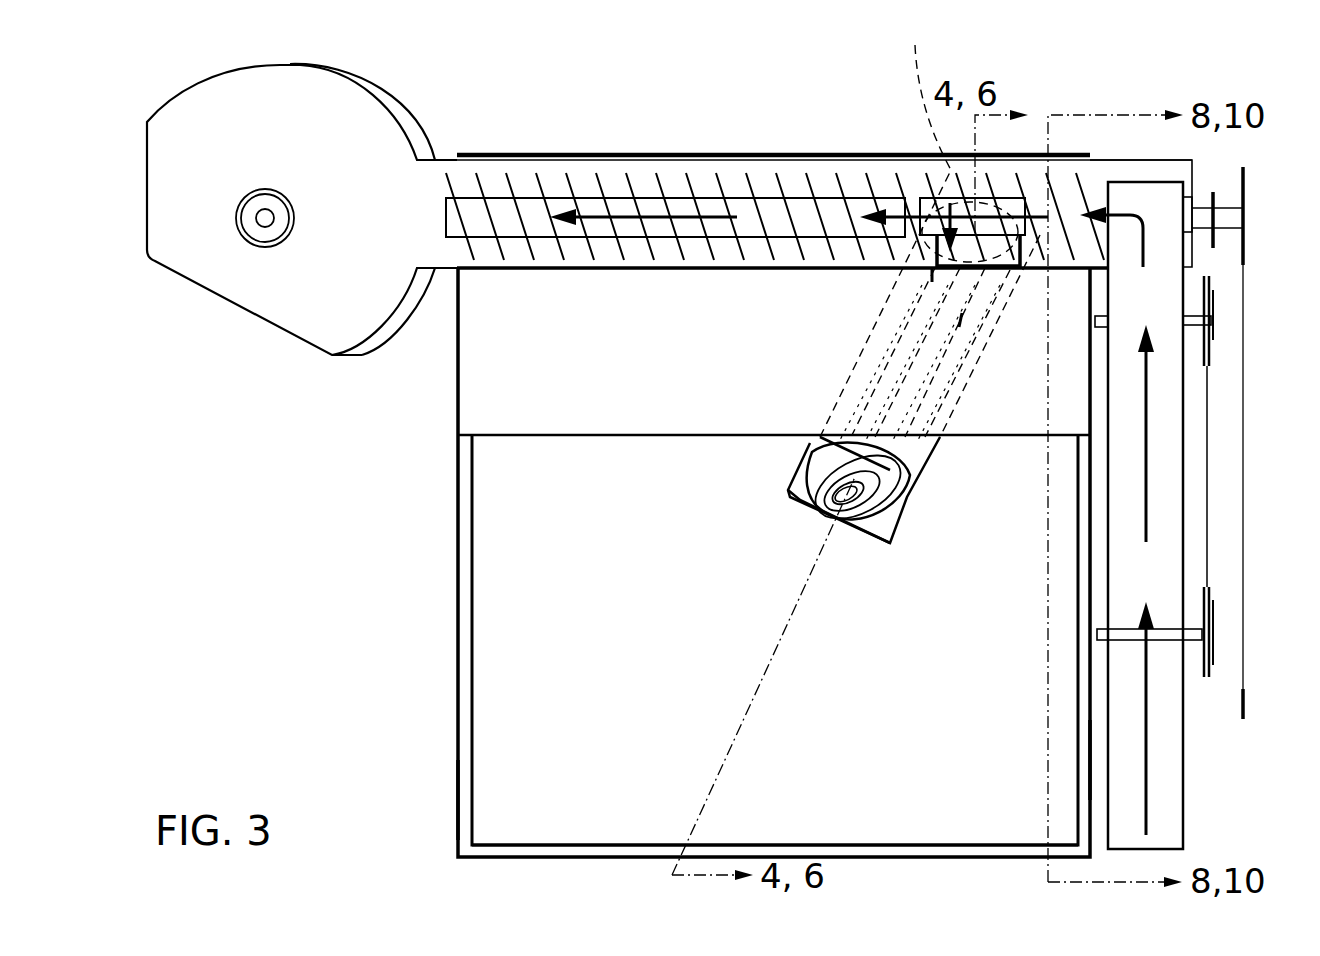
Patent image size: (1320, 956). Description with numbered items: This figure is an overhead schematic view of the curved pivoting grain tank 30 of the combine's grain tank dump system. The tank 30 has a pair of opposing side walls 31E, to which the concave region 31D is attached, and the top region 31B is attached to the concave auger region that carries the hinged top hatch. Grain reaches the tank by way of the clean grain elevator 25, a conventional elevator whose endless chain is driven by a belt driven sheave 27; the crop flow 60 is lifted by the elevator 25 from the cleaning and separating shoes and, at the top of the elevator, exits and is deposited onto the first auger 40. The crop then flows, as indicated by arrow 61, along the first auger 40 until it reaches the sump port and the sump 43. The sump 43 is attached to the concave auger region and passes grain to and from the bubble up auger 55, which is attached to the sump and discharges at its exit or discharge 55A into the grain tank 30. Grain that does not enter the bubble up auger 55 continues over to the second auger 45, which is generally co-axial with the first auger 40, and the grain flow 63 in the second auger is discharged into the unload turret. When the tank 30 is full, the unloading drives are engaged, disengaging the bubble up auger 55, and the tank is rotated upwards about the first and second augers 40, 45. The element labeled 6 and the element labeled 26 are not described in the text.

The swing arm / rotary head 6 is at (306, 313).
The second auger 45 is at (503, 210).
The grain flow 63 is at (596, 205).
The sump 43 is at (930, 226).
The crop flow arrow 61 is at (1013, 195).
The first auger 40 is at (1073, 213).
The grain tank 30 is at (508, 625).
The top region 31B is at (482, 378).
The concave region 31D is at (913, 850).
The side walls 31E is at (468, 797).
The clean grain elevator 25 is at (1170, 807).
The crop flow 60 is at (1142, 212).
The belt driven sheave 27 is at (1213, 317).
The belt 26 is at (1209, 445).
The bubble up auger 55 is at (888, 533).
The exit or discharge 55A is at (805, 507).